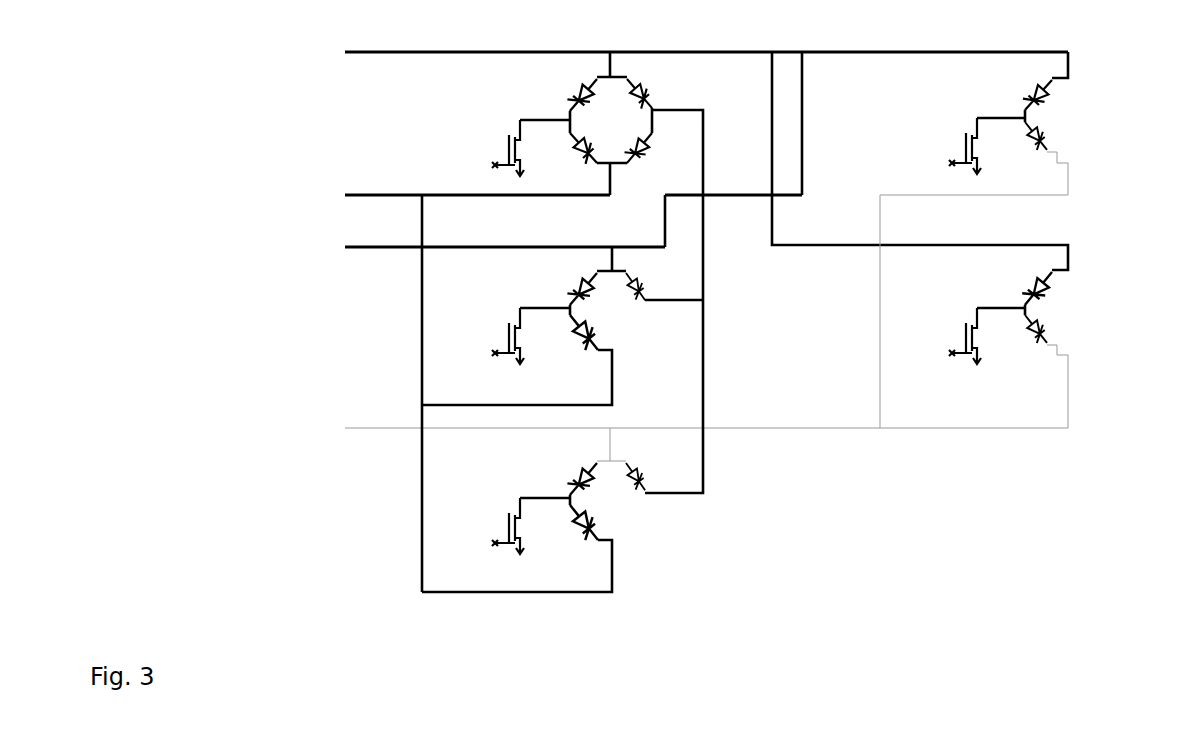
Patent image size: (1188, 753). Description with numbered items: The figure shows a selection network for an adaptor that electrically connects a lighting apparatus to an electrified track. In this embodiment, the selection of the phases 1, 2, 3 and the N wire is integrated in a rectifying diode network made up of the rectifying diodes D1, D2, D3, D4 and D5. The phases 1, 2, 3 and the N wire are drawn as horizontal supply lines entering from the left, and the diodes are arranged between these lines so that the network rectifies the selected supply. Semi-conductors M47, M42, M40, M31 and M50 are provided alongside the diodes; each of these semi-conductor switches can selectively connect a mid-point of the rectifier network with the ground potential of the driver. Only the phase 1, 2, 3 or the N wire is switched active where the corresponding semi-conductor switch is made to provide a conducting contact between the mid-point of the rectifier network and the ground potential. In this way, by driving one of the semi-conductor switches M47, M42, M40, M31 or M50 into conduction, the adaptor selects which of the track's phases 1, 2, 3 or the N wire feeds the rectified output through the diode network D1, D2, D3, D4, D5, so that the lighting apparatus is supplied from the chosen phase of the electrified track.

The rectifying diode D1 is at (645, 100).
The rectifying diode D2 is at (630, 302).
The rectifying diode D3 is at (650, 493).
The rectifying diode D4 is at (1035, 342).
The rectifying diode D5 is at (1055, 148).
The semi-conductor switch M47 is at (508, 150).
The semi-conductor switch M42 is at (508, 332).
The semi-conductor switch M40 is at (508, 522).
The semi-conductor switch M50 is at (963, 150).
The semi-conductor switch M31 is at (965, 320).
The phase L1 1 is at (334, 242).
The phase L2 2 is at (334, 46).
The phase L3 3 is at (334, 190).
The N wire N is at (342, 424).